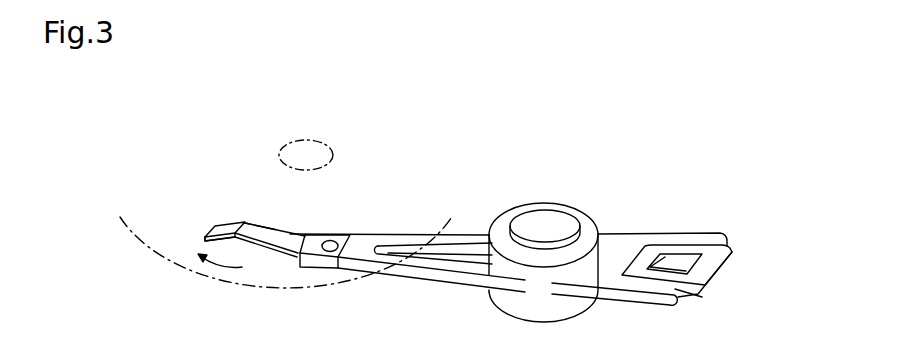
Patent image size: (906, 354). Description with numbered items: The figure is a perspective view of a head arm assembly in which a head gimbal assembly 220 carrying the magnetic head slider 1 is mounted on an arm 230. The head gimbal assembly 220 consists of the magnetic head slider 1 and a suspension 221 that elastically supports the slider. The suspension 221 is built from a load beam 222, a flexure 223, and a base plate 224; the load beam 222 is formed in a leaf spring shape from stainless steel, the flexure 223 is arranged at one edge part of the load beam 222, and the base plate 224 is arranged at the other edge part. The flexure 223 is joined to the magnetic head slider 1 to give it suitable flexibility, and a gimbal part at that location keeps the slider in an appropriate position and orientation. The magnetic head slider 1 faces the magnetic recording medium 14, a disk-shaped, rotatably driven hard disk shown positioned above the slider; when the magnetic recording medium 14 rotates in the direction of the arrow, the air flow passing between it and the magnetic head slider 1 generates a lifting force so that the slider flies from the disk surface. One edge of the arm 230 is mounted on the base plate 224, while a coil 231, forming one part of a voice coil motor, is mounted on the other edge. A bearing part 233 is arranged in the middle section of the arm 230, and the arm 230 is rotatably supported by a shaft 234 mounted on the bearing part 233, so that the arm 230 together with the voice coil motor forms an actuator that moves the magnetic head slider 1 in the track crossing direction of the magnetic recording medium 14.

The magnetic head slider 1 is at (228, 227).
The magnetic recording medium (hard disk) 14 is at (235, 288).
The head gimbal assembly 220 is at (290, 266).
The suspension 221 is at (290, 209).
The load beam 222 is at (305, 237).
The flexure 223 is at (215, 232).
The base plate 224 is at (352, 233).
The arm 230 is at (405, 272).
The coil 231 is at (718, 278).
The bearing part 233 is at (504, 215).
The shaft 234 is at (553, 218).